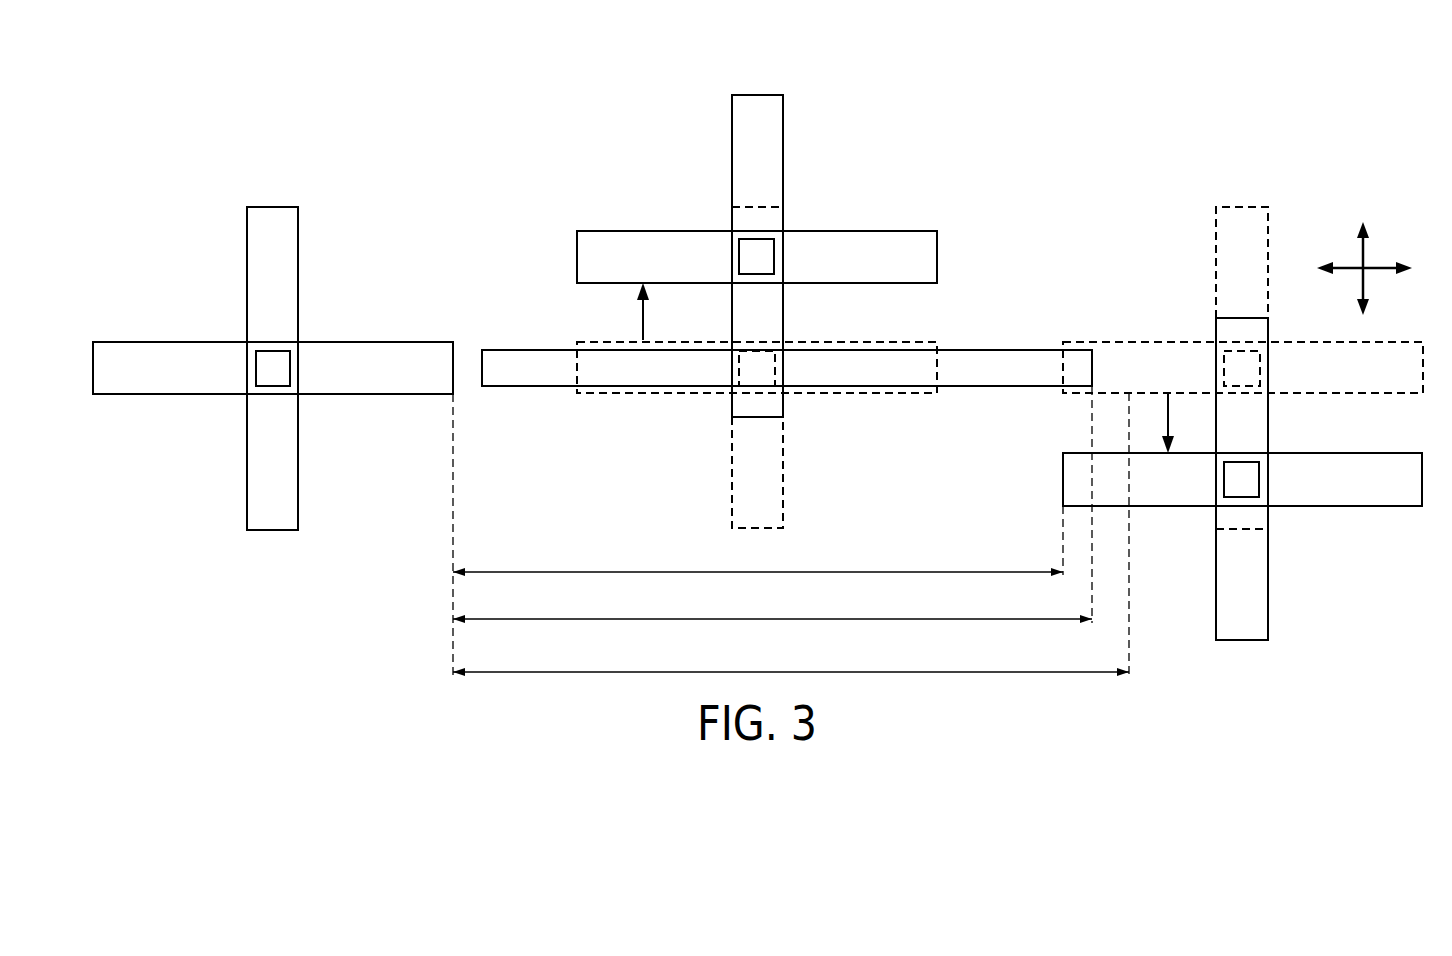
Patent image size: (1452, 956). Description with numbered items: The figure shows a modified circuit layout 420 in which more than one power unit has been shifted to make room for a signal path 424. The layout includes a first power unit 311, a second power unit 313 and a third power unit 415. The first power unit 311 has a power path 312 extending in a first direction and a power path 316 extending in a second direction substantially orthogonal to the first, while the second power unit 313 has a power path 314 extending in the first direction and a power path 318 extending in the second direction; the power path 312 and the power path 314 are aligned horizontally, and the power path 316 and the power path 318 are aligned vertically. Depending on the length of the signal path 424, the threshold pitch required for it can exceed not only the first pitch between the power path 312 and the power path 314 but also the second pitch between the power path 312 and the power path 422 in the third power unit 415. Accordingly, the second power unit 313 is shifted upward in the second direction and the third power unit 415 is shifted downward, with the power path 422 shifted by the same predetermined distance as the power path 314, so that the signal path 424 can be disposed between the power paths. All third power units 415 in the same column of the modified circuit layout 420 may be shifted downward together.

The modified circuit layout 420 is at (108, 123).
The first power unit 311 is at (224, 318).
The power path 312 is at (402, 352).
The second power unit 313 is at (709, 207).
The power path 314 is at (887, 238).
The power path 316 is at (271, 214).
The power path 318 is at (757, 103).
The third power unit 415 is at (1195, 533).
The power path 422 is at (1355, 508).
The signal path 424 is at (1006, 357).